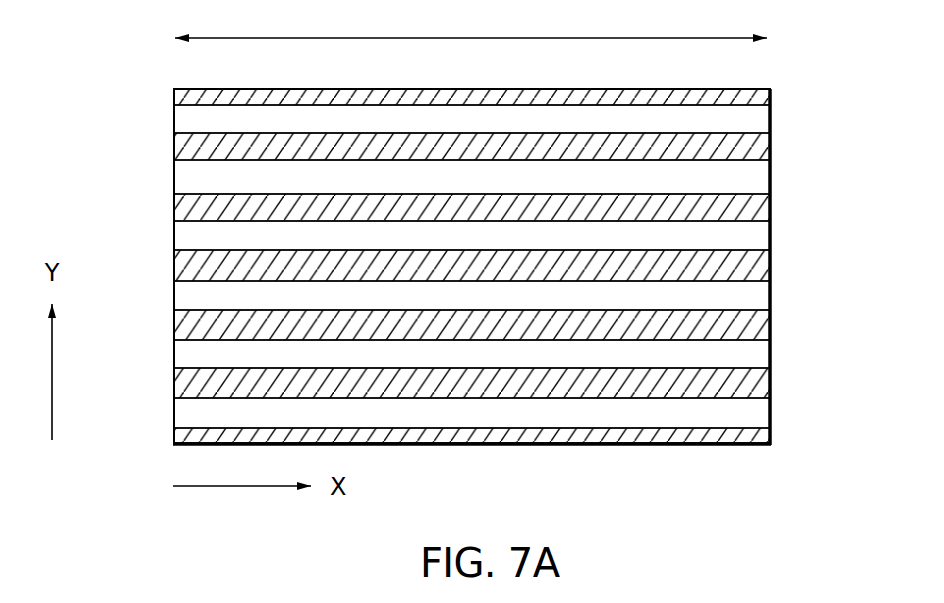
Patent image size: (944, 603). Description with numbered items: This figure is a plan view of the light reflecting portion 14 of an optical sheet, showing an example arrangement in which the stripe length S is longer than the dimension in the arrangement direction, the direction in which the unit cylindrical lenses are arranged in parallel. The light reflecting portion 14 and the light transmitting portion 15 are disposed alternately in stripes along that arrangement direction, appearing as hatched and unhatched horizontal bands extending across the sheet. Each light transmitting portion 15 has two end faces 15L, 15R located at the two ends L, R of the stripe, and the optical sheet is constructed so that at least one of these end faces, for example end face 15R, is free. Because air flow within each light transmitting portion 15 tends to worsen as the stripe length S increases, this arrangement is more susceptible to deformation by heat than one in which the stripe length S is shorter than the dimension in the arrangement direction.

The light reflecting portion 14 is at (445, 91).
The light transmitting portion 15 is at (628, 111).
The end face of light transmitting portion 15L is at (174, 118).
The end face of light transmitting portion 15R is at (771, 117).
The stripe length S is at (471, 21).
The end of stripe L is at (160, 237).
The end of stripe R is at (786, 238).